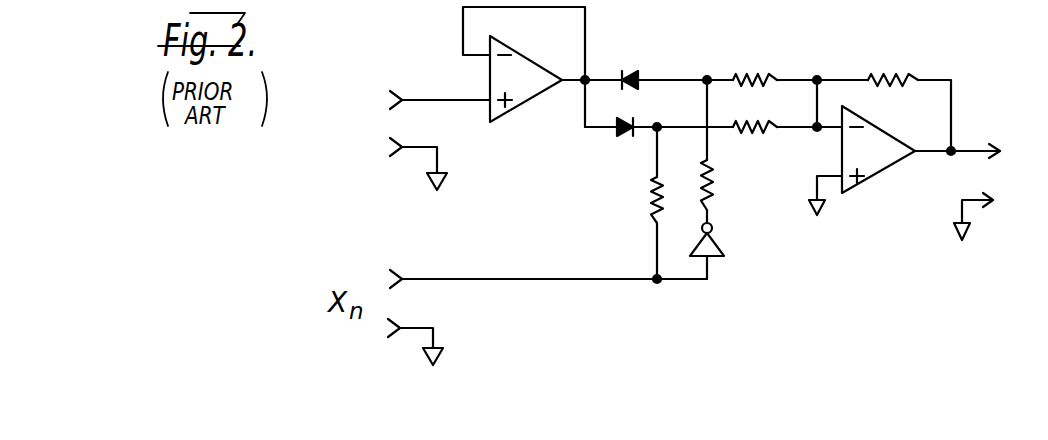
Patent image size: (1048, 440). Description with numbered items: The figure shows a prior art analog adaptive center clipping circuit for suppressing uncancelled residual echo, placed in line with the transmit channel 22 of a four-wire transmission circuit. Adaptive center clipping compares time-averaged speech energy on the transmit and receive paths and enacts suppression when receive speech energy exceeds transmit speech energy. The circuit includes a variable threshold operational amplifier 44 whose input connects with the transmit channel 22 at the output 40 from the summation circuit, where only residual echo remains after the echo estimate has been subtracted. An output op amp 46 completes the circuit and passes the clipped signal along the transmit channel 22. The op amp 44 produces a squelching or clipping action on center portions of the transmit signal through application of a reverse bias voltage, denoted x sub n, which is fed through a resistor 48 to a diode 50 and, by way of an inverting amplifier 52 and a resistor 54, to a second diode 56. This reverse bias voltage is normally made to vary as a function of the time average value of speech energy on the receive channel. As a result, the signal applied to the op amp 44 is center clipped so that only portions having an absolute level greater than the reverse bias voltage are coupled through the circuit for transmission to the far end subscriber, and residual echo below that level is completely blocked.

The transmit channel 22 is at (963, 151).
The output from the summation circuit 40 is at (425, 100).
The variable threshold operational amplifier 44 is at (518, 101).
The output op amp 46 is at (881, 163).
The resistor 48 is at (650, 195).
The diode 50 is at (619, 134).
The inverting amplifier 52 is at (722, 249).
The resistor 54 is at (714, 177).
The diode 56 is at (631, 73).